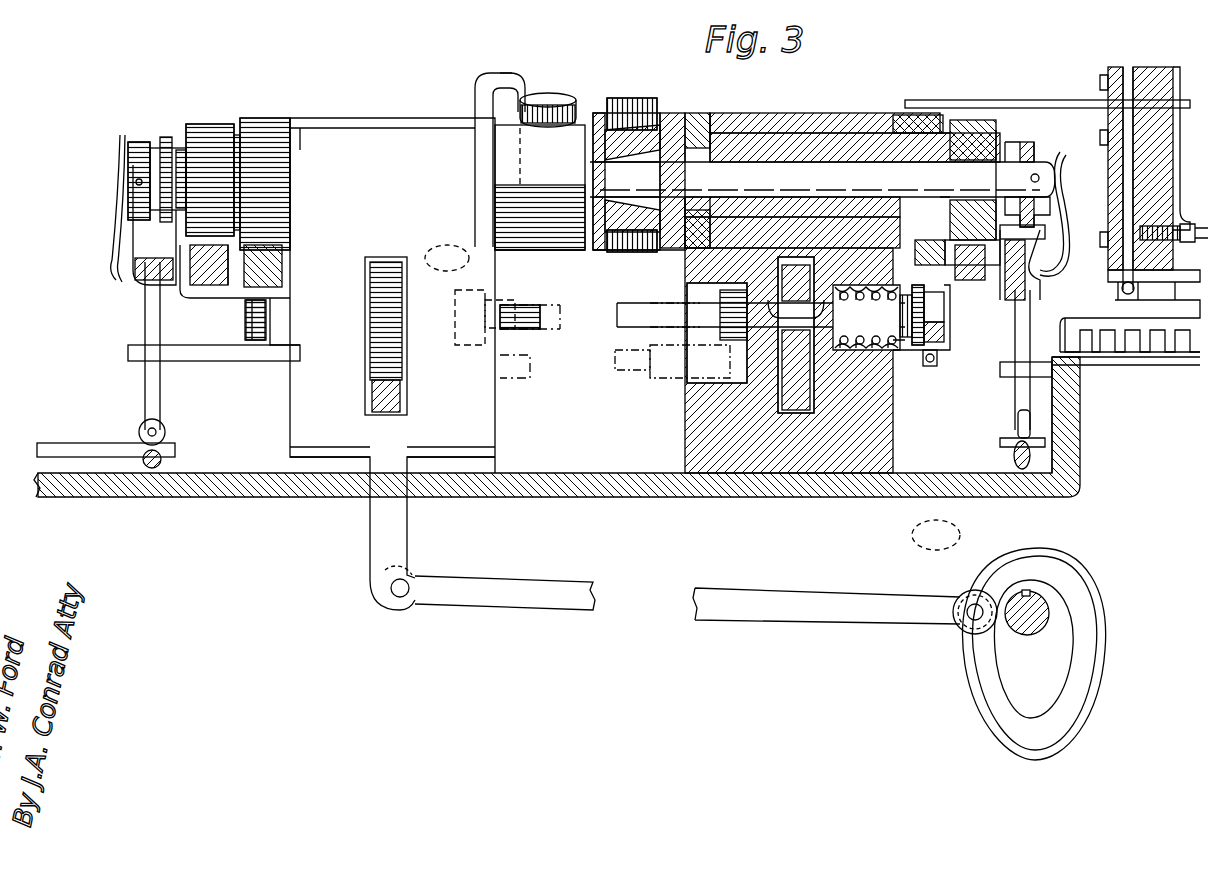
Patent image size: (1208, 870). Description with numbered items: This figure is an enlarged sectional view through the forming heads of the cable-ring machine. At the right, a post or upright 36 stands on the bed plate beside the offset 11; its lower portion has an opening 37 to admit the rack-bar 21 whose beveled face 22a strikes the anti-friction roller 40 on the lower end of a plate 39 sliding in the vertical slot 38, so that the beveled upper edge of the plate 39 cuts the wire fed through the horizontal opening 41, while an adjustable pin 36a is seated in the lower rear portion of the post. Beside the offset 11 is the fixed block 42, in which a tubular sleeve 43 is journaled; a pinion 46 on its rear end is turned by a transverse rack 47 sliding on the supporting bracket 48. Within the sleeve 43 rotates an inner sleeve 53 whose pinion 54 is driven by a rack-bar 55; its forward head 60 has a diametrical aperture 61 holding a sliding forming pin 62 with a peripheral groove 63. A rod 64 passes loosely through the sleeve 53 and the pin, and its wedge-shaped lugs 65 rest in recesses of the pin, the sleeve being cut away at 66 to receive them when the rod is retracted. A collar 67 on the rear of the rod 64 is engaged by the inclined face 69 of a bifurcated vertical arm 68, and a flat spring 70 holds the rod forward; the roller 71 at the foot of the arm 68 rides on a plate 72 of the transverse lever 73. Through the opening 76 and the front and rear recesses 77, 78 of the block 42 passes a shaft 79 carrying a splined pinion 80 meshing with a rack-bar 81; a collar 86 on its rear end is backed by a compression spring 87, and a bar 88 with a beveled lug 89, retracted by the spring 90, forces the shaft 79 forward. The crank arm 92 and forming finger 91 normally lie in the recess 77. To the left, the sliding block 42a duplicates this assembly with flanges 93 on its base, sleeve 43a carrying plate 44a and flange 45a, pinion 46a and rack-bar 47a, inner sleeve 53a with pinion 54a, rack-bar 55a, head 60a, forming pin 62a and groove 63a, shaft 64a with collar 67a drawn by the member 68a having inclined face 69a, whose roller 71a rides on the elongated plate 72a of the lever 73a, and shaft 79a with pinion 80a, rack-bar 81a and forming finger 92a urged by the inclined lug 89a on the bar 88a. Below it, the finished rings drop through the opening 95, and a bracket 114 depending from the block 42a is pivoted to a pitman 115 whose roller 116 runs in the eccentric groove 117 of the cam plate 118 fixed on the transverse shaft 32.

The offset 11 is at (1098, 398).
The rack-bar 21 is at (1176, 350).
The inclined or beveled face 22a is at (1068, 318).
The transverse shaft 32 is at (1042, 600).
The post or upright 36 is at (1160, 160).
The horizontally disposed pin 36a is at (1178, 228).
The opening 37 is at (1162, 272).
The vertically disposed slot 38 is at (1118, 70).
The plate 39 is at (1128, 193).
The anti-friction roller 40 is at (1108, 352).
The horizontally disposed opening 41 is at (1148, 98).
The block 42 is at (893, 440).
The sliding block 42a is at (392, 295).
The tubular shaft or sleeve 43 is at (762, 130).
The sleeve 43a is at (237, 135).
The plate 44a is at (478, 100).
The flange 45a is at (500, 73).
The pinion 46 is at (905, 115).
The pinion 46a is at (262, 135).
The rack 47 is at (935, 265).
The rack-bar 47a is at (283, 265).
The supporting bracket 48 is at (985, 265).
The tubular shaft or sleeve 53 is at (732, 120).
The sleeve 53a is at (182, 150).
The pinion 54 is at (970, 118).
The pinion 54a is at (210, 124).
The rack-bar 55 is at (972, 280).
The rack-bar 55a is at (212, 285).
The head 60 is at (672, 113).
The head 60a is at (552, 250).
The aperture 61 is at (632, 248).
The pin 62 is at (600, 113).
The forming pin 62a is at (545, 95).
The peripheral groove 63 is at (662, 110).
The peripheral groove 63a is at (542, 125).
The rod 64 is at (788, 168).
The shaft 64a is at (166, 150).
The wedge-shaped lugs 65 is at (632, 198).
The cut-away portions 66 is at (695, 140).
The collar 67 is at (1028, 142).
The collar 67a is at (135, 142).
The vertically disposed arm 68 is at (1015, 357).
The vertically moving member 68a is at (145, 392).
The inclined face 69 is at (1055, 245).
The inclined face 69a is at (136, 248).
The flat spring 70 is at (1062, 160).
The anti-friction roller 71 is at (1018, 420).
The anti-friction roller 71a is at (160, 430).
The plate 72 is at (1045, 443).
The elongated plate 72a is at (48, 443).
The lever 73 is at (1014, 452).
The lever 73a is at (145, 465).
The opening 76 is at (790, 400).
The recess 77 is at (700, 380).
The recess 78 is at (893, 360).
The shaft 79 is at (660, 312).
The shaft 79a is at (520, 332).
The pinion 80 is at (822, 390).
The pinion 80a is at (382, 345).
The rack-bar 81 is at (800, 395).
The rack-bar 81a is at (374, 400).
The collar 86 is at (906, 337).
The compression spring 87 is at (855, 350).
The bar 88 is at (945, 334).
The bar 88a is at (252, 340).
The lug 89 is at (925, 315).
The inclined lug 89a is at (258, 342).
The retractile spring 90 is at (938, 360).
The forming finger 91 is at (620, 335).
The crank arm 92 is at (720, 340).
The forming finger 92a is at (468, 300).
The flanges 93 is at (452, 410).
The opening 95 is at (570, 490).
The bracket 114 is at (385, 542).
The pitman 115 is at (545, 600).
The roller 116 is at (972, 590).
The eccentric groove 117 is at (1068, 700).
The cam plate 118 is at (970, 700).